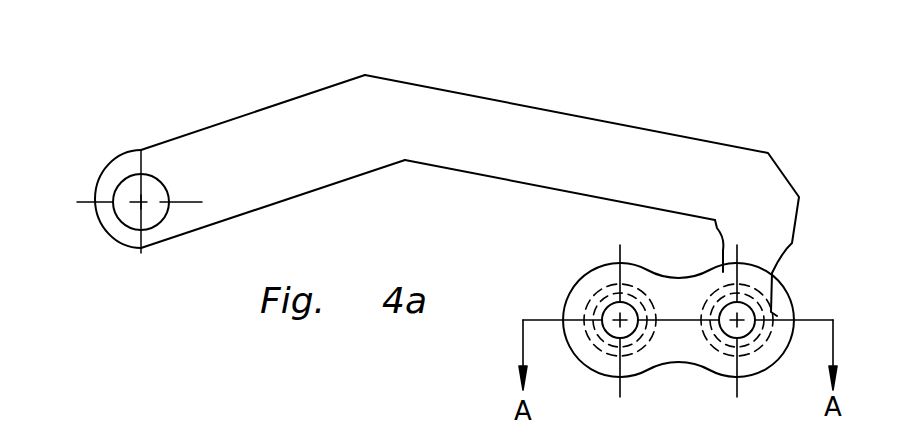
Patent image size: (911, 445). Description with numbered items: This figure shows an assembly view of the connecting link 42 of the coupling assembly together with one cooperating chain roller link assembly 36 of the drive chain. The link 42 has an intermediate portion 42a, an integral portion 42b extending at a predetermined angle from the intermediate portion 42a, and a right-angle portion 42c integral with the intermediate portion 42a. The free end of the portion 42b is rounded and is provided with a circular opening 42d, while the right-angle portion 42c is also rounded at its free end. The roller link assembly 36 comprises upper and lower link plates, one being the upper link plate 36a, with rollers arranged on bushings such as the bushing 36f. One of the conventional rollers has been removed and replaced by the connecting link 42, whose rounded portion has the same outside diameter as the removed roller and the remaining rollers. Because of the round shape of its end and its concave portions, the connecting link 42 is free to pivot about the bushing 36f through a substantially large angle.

The link 42 is at (447, 38).
The intermediate portion 42a is at (640, 141).
The integral portion 42b is at (274, 118).
The right-angle portion 42c is at (718, 251).
The circular opening 42d is at (117, 190).
The chain roller link assembly 36 is at (708, 345).
The upper link plate 36a is at (678, 360).
The bushing 36f is at (782, 311).